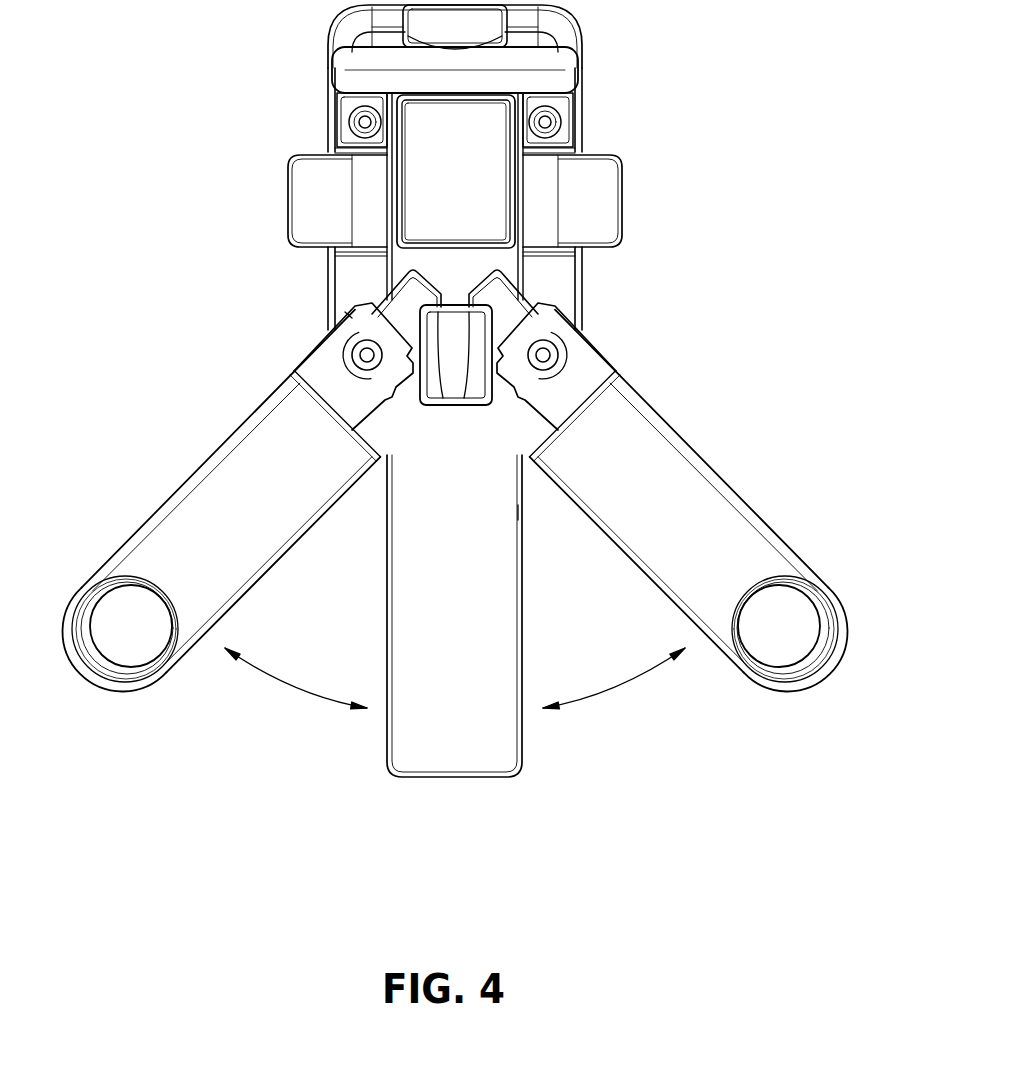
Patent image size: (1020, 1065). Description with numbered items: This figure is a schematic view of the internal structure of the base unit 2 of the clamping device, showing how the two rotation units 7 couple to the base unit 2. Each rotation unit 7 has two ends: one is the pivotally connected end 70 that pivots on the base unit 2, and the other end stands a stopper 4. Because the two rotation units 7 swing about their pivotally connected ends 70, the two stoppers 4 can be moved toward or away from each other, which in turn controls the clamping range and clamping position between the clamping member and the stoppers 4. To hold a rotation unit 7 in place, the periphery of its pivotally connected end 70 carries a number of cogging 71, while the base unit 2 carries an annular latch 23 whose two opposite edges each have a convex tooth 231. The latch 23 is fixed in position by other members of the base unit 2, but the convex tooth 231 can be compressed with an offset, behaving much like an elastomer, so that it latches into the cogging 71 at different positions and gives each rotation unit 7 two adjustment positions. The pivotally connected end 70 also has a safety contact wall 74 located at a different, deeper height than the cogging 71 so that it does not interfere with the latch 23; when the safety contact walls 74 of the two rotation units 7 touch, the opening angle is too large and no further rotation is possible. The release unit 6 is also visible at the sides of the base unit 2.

The base unit 2 is at (587, 107).
The stopper 4 is at (127, 640).
The release unit 6 is at (622, 207).
The rotation unit 7 is at (222, 476).
The latch 23 is at (443, 405).
The convex tooth 231 is at (348, 312).
The pivotally connected end 70 is at (351, 344).
The cogging 71 is at (372, 381).
The safety contact wall 74 is at (410, 268).